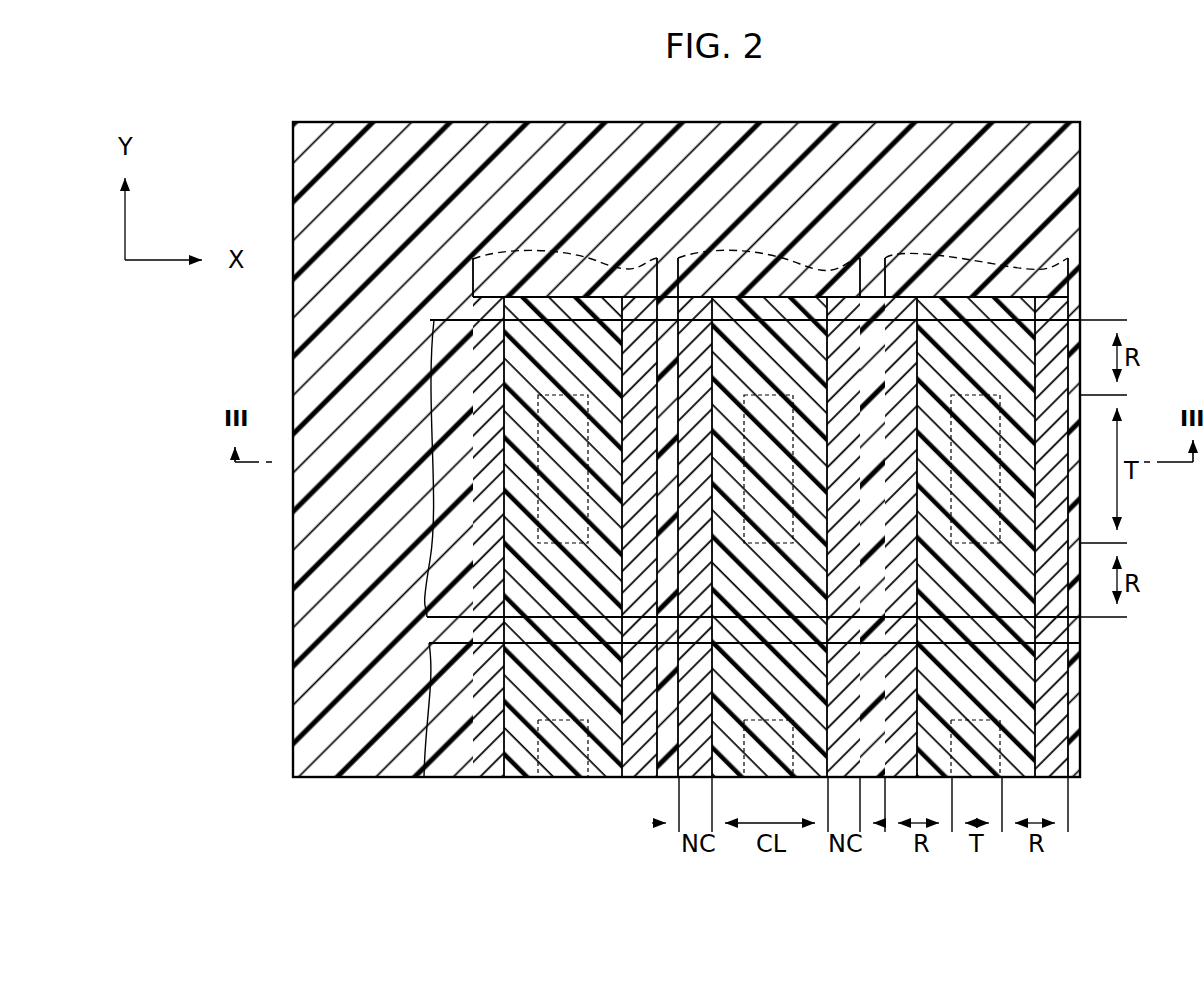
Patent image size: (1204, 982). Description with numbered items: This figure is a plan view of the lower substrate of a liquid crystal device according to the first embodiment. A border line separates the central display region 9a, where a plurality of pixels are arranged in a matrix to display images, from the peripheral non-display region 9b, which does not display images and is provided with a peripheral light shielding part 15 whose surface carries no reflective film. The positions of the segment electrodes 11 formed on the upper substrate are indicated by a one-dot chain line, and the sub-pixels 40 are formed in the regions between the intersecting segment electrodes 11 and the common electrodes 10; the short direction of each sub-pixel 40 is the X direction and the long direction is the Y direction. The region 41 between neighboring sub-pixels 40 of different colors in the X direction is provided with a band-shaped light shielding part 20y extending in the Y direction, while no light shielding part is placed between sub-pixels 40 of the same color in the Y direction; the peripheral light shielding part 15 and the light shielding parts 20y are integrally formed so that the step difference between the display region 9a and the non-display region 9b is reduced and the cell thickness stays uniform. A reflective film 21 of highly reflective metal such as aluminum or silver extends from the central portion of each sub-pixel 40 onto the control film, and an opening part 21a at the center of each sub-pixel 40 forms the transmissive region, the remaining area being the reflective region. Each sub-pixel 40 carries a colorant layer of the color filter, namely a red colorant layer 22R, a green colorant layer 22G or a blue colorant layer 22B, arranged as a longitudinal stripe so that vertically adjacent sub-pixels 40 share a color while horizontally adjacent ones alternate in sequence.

The display region 9a is at (843, 445).
The non-display region 9b is at (333, 139).
The common electrode 10 is at (445, 576).
The segment electrode 11 is at (540, 252).
The peripheral light shielding part 15 is at (388, 138).
The light shielding part 20y is at (670, 768).
The reflective film 21 is at (485, 758).
The opening part 21a is at (548, 745).
The red colorant layer 22R is at (602, 753).
The green colorant layer 22G is at (807, 750).
The blue colorant layer 22B is at (1020, 680).
The sub-pixel 40 is at (553, 353).
The region between sub-pixels 41 is at (663, 282).